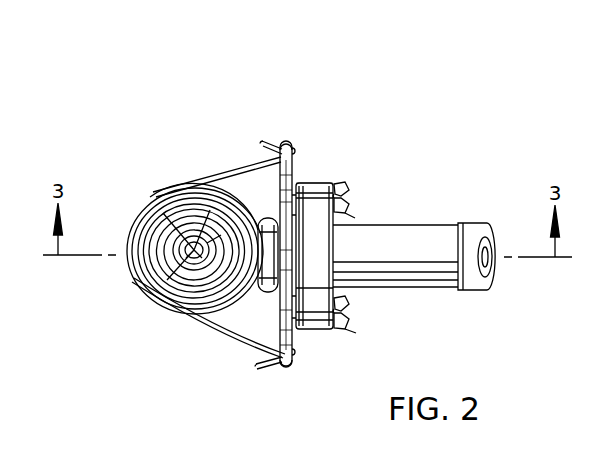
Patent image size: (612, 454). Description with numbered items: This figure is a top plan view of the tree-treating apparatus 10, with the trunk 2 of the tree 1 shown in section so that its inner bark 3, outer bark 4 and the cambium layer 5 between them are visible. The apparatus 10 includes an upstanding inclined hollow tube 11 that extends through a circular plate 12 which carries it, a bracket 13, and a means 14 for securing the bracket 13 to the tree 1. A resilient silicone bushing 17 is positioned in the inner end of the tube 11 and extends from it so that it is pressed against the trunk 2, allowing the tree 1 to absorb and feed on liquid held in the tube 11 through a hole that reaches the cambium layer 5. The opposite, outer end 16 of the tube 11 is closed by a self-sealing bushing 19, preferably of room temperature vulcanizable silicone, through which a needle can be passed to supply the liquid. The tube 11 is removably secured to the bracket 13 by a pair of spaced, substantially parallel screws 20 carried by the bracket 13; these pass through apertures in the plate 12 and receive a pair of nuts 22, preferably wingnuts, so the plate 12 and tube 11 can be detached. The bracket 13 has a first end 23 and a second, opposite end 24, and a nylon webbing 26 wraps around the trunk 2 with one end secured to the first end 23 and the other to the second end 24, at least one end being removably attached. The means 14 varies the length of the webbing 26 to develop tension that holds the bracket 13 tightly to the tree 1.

The tree 1 is at (155, 192).
The trunk 2 is at (238, 189).
The inner bark 3 is at (157, 305).
The outer bark 4 is at (140, 281).
The cambium layer 5 is at (172, 290).
The apparatus 10 is at (330, 165).
The hollow tube 11 is at (448, 292).
The circular plate 12 is at (333, 248).
The bracket 13 is at (293, 173).
The means for securing the bracket to the tree 14 is at (274, 133).
The outer end 16 is at (436, 242).
The resilient bushing 17 is at (268, 296).
The self-sealing bushing 19 is at (488, 238).
The screws 20 is at (325, 181).
The nuts 22 is at (354, 216).
The first end 23 is at (289, 370).
The second end 24 is at (284, 148).
The nylon webbing 26 is at (126, 222).